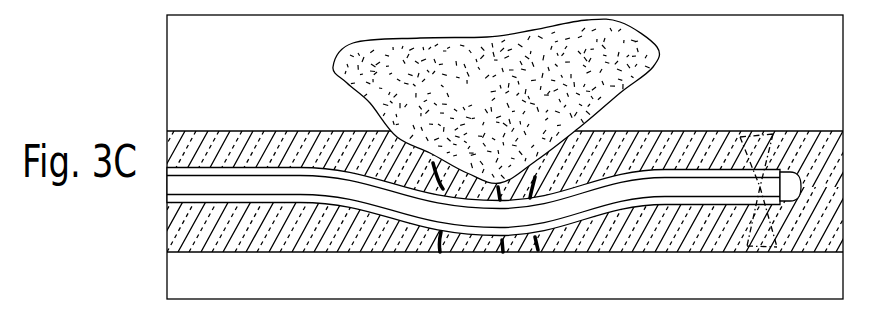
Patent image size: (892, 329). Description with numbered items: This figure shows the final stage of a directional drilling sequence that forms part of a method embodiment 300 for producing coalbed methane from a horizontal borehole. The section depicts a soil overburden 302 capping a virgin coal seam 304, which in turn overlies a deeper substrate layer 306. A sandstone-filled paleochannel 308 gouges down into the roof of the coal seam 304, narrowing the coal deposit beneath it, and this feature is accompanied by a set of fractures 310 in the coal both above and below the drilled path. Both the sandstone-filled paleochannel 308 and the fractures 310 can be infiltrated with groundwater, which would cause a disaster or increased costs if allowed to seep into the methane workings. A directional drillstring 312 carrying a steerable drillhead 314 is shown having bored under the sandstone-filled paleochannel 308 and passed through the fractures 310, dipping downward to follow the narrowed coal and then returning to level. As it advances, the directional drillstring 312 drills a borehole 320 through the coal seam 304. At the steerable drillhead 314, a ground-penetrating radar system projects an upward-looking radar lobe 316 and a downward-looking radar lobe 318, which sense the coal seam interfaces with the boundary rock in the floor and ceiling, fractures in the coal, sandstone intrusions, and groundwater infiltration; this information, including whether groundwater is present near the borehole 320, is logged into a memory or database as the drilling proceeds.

The method embodiment 300 is at (100, 61).
The soil overburden 302 is at (247, 58).
The virgin coal seam 304 is at (358, 154).
The substrate layer 306 is at (347, 284).
The sandstone-filled paleochannel 308 is at (485, 100).
The fractures 310 is at (536, 266).
The directional drillstring 312 is at (712, 198).
The steerable drillhead 314 is at (793, 178).
The upward-looking radar lobe 316 is at (760, 143).
The downward-looking radar lobe 318 is at (768, 244).
The borehole 320 is at (702, 212).